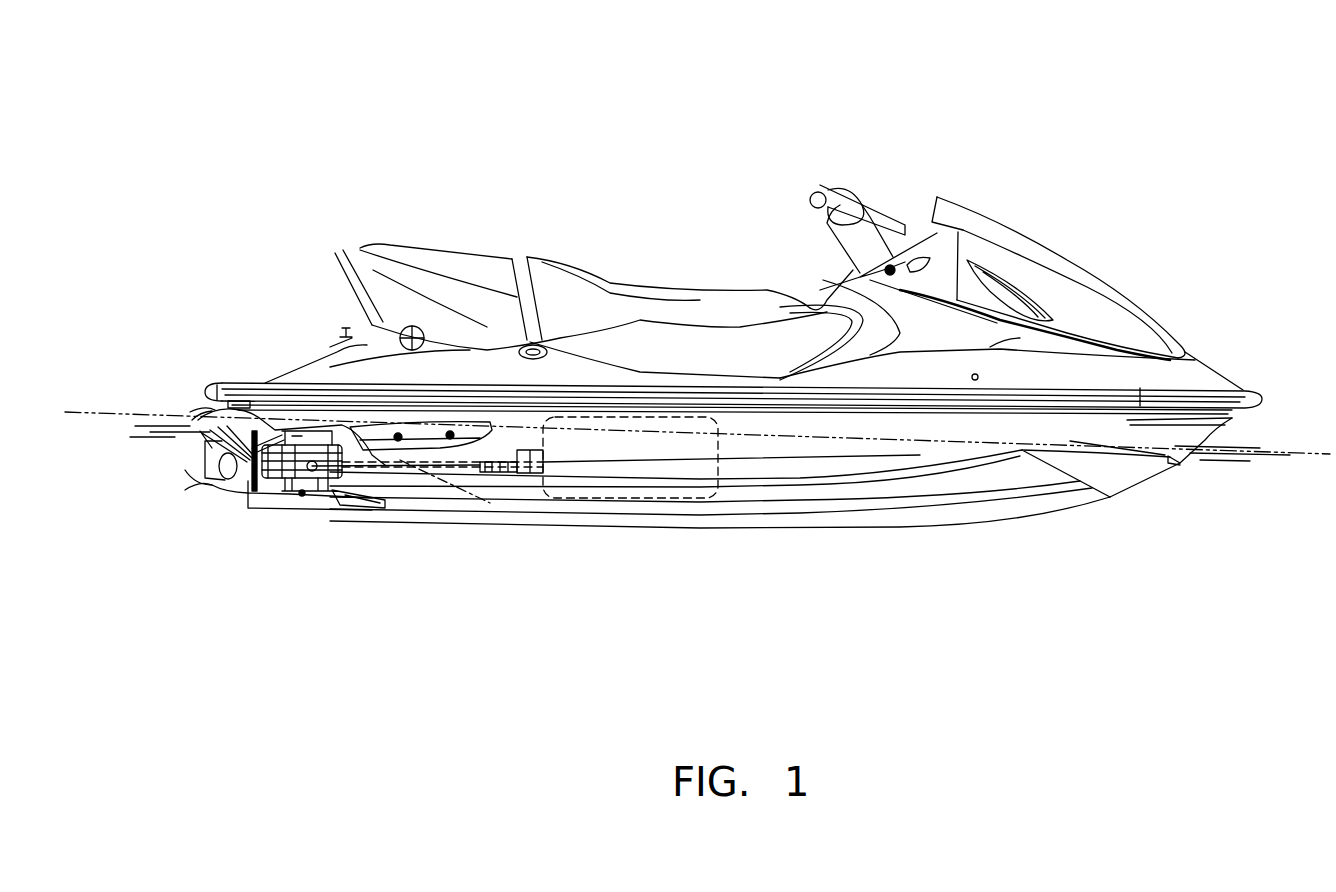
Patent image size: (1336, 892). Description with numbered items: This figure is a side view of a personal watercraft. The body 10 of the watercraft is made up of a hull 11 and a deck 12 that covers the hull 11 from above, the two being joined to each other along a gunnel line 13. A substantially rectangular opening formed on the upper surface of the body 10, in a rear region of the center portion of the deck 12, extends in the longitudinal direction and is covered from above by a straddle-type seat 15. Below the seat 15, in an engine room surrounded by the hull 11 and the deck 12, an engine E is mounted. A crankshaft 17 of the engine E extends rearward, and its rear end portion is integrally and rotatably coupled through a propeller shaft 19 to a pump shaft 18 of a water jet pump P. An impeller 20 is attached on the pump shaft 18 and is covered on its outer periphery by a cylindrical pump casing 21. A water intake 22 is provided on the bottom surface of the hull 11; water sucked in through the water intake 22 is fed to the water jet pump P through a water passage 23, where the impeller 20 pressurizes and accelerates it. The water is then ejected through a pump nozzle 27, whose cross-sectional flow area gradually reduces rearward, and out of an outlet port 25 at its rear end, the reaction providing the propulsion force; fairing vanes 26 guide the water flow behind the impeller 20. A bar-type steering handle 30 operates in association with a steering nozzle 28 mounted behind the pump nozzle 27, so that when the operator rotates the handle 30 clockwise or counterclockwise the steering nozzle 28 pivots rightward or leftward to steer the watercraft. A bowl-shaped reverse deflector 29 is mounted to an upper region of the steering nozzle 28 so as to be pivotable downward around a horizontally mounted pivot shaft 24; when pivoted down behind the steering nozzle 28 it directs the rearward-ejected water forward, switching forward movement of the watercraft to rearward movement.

The body 10 is at (1322, 298).
The hull 11 is at (1257, 412).
The deck 12 is at (1222, 388).
The gunnel line 13 is at (203, 392).
The straddle-type seat 15 is at (672, 297).
The crankshaft 17 is at (540, 487).
The pump shaft 18 is at (280, 500).
The propeller shaft 19 is at (410, 487).
The impeller 20 is at (328, 497).
The pump casing 21 is at (303, 493).
The water intake 22 is at (452, 500).
The water passage 23 is at (426, 500).
The pivot shaft 24 is at (217, 475).
The outlet port 25 is at (212, 485).
The fairing vanes 26 is at (295, 412).
The pump nozzle 27 is at (267, 497).
The steering nozzle 28 is at (223, 482).
The reverse deflector 29 is at (200, 418).
The steering handle 30 is at (826, 185).
The water jet pump P is at (301, 422).
The engine E is at (717, 470).